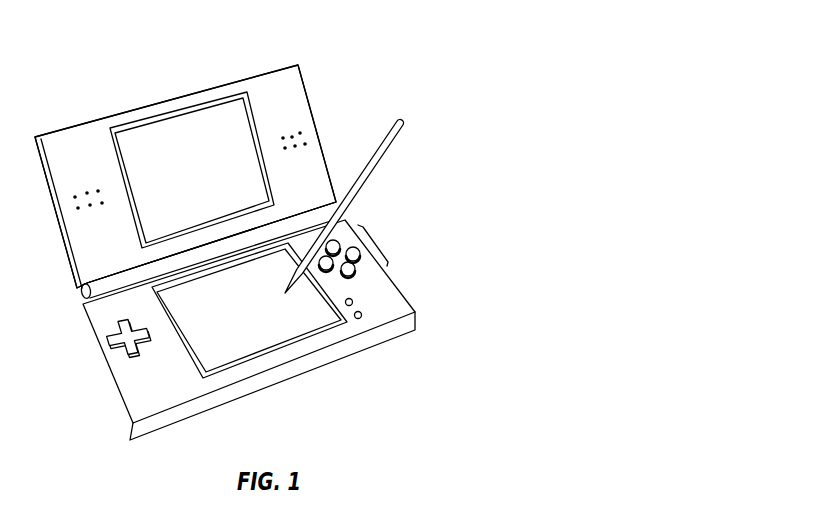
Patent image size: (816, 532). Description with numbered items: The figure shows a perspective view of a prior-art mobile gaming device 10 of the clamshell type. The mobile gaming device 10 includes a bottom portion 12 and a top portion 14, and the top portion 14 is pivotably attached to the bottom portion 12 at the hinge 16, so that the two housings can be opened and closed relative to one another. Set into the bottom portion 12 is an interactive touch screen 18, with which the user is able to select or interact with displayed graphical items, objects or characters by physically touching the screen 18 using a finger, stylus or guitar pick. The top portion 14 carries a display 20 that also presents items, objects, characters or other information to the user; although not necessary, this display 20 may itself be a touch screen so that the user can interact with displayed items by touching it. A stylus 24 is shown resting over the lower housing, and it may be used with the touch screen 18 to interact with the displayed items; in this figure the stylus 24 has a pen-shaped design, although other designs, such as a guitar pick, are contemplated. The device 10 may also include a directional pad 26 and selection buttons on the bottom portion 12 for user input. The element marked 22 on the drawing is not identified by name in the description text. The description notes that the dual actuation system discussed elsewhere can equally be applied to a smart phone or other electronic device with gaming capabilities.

The mobile gaming device 10 is at (442, 40).
The bottom portion 12 is at (398, 308).
The top portion 14 is at (293, 90).
The hinge 16 is at (80, 293).
The interactive touch screen 18 is at (250, 320).
The display 20 is at (187, 168).
The shoulder button 22 is at (375, 237).
The stylus 24 is at (392, 140).
The directional pad 26 is at (110, 338).